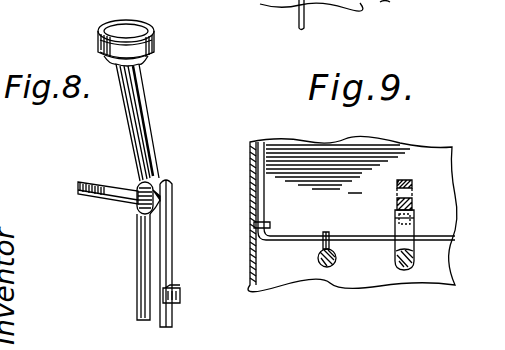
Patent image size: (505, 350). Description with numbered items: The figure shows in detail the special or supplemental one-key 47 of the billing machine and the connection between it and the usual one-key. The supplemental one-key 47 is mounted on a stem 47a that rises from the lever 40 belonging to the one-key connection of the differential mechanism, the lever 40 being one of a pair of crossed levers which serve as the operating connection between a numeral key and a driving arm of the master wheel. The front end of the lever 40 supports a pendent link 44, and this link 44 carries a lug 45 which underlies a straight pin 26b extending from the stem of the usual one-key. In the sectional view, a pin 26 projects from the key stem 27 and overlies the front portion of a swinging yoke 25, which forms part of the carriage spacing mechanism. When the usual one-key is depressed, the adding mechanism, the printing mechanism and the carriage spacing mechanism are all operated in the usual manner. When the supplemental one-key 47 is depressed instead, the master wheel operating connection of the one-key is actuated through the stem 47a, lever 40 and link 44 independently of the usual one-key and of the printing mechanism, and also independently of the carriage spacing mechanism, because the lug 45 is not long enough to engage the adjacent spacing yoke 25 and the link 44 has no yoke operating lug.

In FIG. 8, the supplemental 1-key 47 is at (155, 44).
In FIG. 8, the stem 47a is at (139, 125).
In FIG. 8, the lever 40 is at (108, 196).
In FIG. 8, the link 44 is at (157, 233).
In FIG. 9, the link 44 is at (412, 181).
In FIG. 8, the lug 45 is at (180, 297).
In FIG. 9, the lug 45 is at (396, 212).
In FIG. 9, the swinging yoke 25 is at (266, 200).
In FIG. 9, the pin 26 is at (321, 247).
In FIG. 9, the stem 27 is at (336, 261).
In FIG. 9, the straight pin 26b is at (405, 242).